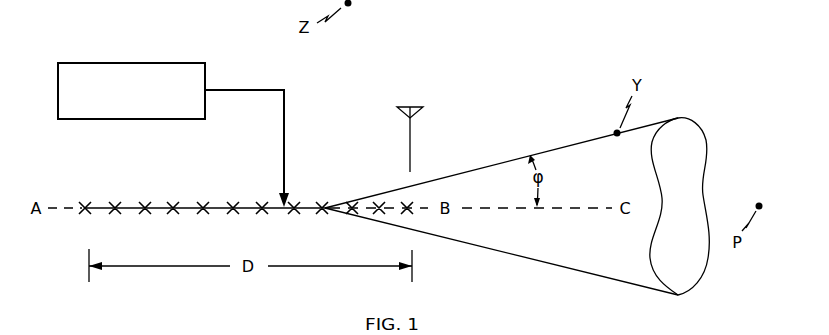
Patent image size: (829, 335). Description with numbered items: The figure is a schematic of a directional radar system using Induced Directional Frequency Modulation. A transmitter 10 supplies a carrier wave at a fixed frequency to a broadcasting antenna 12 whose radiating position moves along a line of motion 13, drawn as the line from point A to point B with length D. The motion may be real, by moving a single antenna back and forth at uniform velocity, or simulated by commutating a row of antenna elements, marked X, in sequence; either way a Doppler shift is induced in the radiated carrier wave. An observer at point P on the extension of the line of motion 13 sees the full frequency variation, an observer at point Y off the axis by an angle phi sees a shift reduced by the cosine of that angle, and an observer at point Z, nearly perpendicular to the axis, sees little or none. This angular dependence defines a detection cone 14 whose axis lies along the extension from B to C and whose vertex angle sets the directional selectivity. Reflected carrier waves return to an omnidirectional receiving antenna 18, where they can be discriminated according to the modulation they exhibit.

The transmitter 10 is at (173, 114).
The broadcasting antenna 12 is at (71, 225).
The line of motion 13 is at (261, 225).
The detection cone 14 is at (517, 212).
The omnidirectional receiving antenna 18 is at (421, 121).